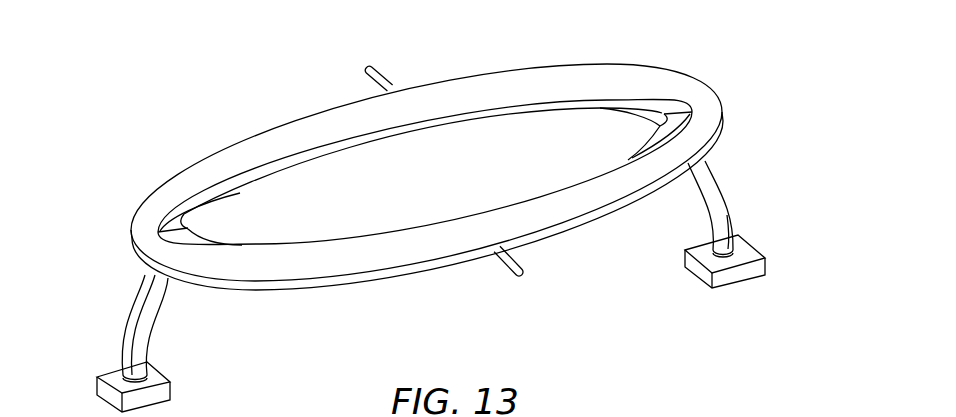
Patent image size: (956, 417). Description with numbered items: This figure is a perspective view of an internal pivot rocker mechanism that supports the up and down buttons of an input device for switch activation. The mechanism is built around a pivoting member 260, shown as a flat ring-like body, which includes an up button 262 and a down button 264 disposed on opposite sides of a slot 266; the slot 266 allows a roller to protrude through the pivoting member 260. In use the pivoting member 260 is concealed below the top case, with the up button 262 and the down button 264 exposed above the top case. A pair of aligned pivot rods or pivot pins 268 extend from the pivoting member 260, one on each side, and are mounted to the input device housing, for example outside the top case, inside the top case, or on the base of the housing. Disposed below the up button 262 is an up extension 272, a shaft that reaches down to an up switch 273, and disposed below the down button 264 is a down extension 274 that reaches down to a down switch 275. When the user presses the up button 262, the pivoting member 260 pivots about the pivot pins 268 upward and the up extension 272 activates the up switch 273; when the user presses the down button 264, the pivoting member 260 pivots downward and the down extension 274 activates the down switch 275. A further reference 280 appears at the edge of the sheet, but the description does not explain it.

The pivoting member 260 is at (521, 81).
The up button 262 is at (668, 107).
The down button 264 is at (174, 217).
The slot 266 is at (333, 177).
The pivot pins 268 is at (384, 74).
The up extension 272 is at (720, 182).
The up switch 273 is at (747, 252).
The down extension 274 is at (127, 323).
The down switch 275 is at (158, 379).
The element 280 is at (674, 416).